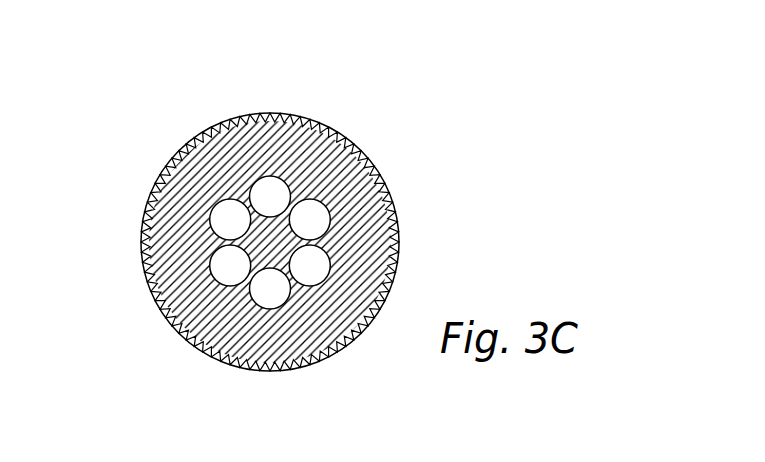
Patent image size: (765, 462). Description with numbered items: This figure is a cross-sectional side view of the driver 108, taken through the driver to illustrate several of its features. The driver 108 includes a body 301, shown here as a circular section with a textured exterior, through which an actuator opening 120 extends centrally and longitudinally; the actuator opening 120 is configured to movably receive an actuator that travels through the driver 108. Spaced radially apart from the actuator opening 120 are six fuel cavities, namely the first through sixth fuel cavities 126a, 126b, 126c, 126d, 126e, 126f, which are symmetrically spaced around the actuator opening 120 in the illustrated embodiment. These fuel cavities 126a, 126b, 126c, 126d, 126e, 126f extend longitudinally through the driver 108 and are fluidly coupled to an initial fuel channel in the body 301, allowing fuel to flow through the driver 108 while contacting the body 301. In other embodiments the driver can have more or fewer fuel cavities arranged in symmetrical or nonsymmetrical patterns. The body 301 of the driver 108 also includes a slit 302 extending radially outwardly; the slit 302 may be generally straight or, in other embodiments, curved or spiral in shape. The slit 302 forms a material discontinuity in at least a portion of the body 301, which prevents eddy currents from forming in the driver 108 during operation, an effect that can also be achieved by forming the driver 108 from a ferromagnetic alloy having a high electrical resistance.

The driver 108 is at (320, 128).
The actuator opening 120 is at (340, 243).
The first fuel cavity 126a is at (280, 188).
The second fuel cavity 126b is at (322, 216).
The third fuel cavity 126c is at (321, 268).
The fourth fuel cavity 126d is at (260, 297).
The fifth fuel cavity 126e is at (213, 258).
The sixth fuel cavity 126f is at (218, 224).
The body 301 is at (196, 138).
The slit 302 is at (177, 300).